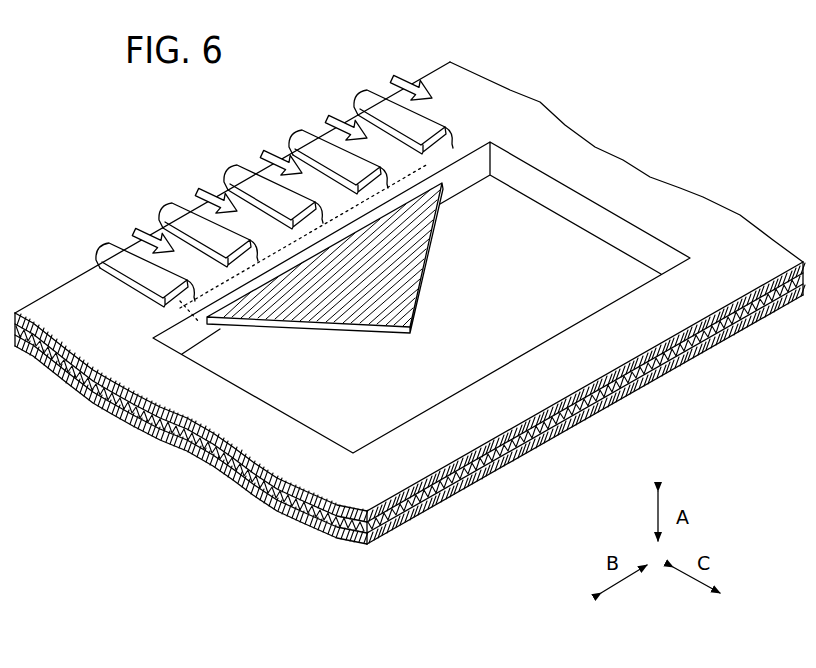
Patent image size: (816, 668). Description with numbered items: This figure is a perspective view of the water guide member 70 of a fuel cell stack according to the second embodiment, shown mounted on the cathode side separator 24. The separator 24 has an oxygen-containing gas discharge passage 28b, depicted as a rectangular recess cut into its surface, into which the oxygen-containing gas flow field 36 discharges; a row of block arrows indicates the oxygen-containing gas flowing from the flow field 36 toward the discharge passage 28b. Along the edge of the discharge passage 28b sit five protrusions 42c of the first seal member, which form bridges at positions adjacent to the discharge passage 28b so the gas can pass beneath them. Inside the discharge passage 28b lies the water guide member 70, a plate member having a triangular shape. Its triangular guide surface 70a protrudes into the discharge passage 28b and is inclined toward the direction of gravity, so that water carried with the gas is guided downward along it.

The cathode side separator 24 is at (166, 113).
The oxygen-containing gas discharge passage 28b is at (532, 286).
The oxygen-containing gas flow field 36 is at (141, 225).
The protrusions 42c is at (380, 98).
The water guide member 70 is at (338, 288).
The guide surface 70a is at (387, 311).